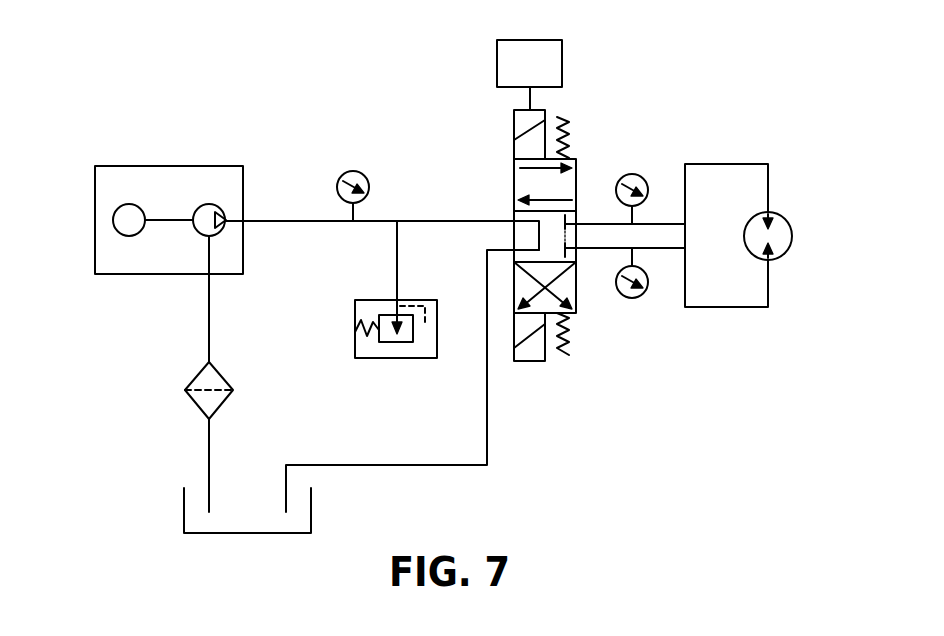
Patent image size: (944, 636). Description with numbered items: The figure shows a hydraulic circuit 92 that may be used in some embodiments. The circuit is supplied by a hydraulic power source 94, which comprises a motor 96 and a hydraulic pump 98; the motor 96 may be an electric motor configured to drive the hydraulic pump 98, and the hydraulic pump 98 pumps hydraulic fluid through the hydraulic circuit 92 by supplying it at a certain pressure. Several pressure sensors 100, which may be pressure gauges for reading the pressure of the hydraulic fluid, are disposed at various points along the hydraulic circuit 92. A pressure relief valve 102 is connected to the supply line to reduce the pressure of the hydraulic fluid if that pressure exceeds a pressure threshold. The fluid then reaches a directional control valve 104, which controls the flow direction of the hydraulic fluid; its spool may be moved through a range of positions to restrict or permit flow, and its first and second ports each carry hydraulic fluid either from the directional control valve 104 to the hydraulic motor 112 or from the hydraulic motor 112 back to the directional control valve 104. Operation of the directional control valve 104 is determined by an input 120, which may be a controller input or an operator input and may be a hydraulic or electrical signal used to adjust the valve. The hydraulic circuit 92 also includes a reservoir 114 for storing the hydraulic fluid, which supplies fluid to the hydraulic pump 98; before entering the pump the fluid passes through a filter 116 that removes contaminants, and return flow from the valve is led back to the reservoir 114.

The hydraulic circuit 92 is at (731, 432).
The hydraulic power source 94 is at (95, 217).
The motor 96 is at (129, 204).
The hydraulic pump 98 is at (209, 204).
The pressure sensor 100 is at (353, 171).
The pressure relief valve 102 is at (397, 358).
The directional control valve 104 is at (577, 183).
The hydraulic motor 112 is at (792, 236).
The reservoir 114 is at (184, 506).
The filter 116 is at (200, 373).
The input 120 is at (562, 63).